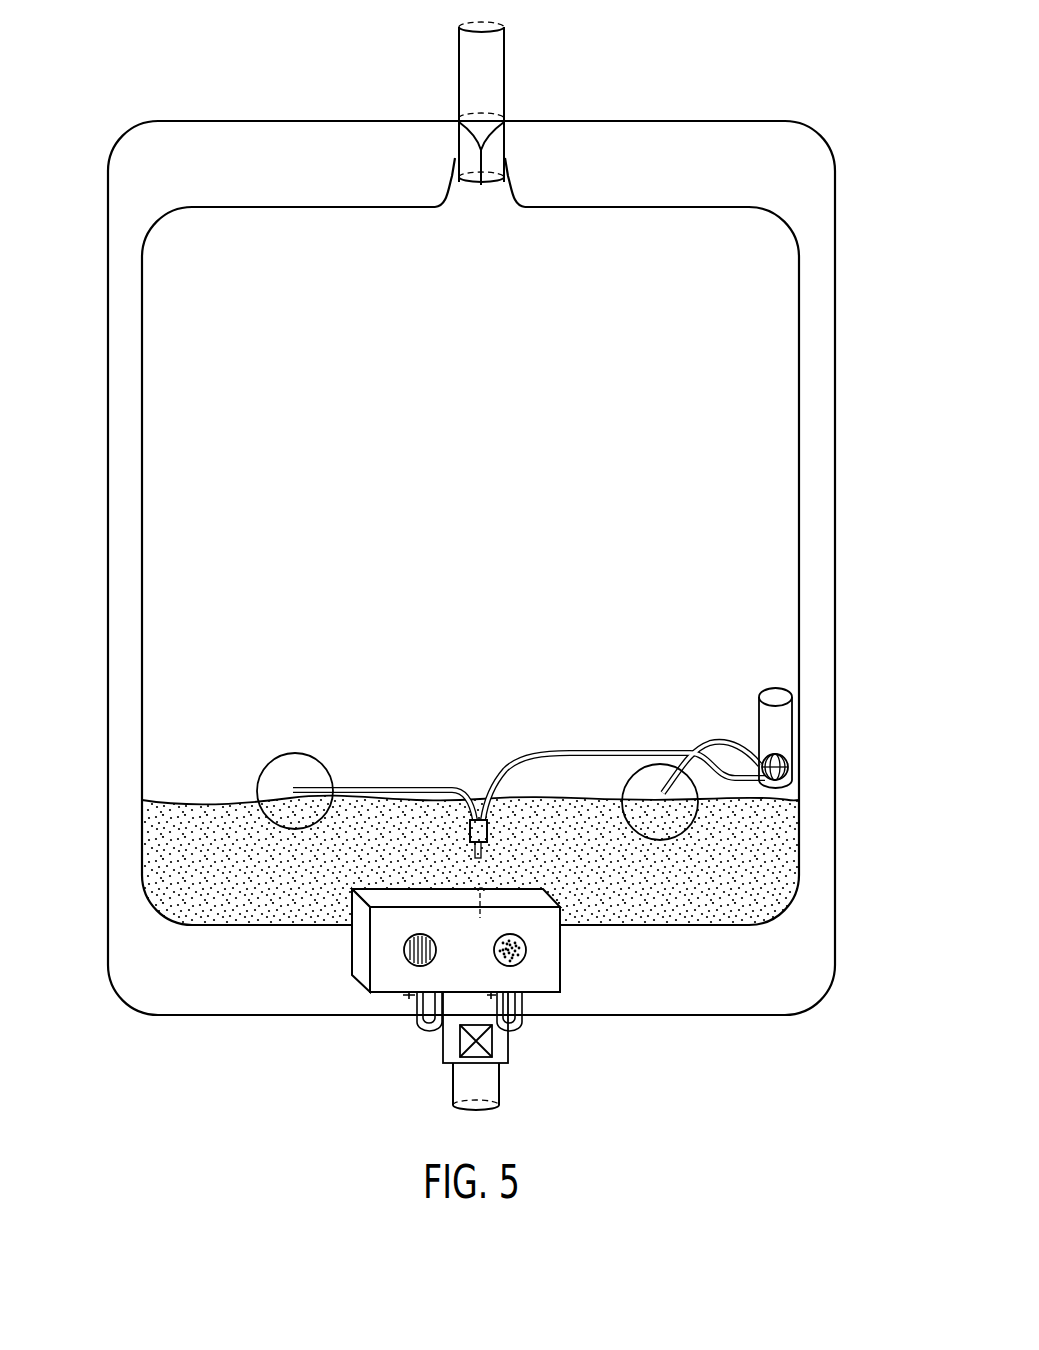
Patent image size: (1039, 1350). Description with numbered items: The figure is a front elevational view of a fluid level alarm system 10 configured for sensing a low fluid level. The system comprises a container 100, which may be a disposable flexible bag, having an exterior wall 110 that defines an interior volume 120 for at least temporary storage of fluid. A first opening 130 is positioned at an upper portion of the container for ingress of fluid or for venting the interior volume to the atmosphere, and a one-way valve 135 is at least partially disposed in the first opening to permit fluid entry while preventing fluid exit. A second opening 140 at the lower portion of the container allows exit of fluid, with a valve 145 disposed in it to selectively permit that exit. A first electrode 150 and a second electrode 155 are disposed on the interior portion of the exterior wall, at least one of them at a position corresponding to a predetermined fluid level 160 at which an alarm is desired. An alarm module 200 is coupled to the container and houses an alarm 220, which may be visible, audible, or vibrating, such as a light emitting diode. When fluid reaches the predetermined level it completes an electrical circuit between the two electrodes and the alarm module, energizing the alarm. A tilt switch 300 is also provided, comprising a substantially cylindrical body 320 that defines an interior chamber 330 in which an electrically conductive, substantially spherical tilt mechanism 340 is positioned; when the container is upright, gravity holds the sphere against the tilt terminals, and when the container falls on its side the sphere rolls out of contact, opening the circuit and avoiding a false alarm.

The fluid level alarm system 10 is at (806, 72).
The container 100 is at (818, 375).
The exterior wall 110 is at (836, 546).
The interior volume 120 is at (481, 579).
The first opening 130 is at (493, 48).
The one-way valve 135 is at (481, 133).
The second opening 140 is at (492, 1110).
The valve 145 is at (466, 1048).
The first electrode 150 is at (310, 768).
The second electrode 155 is at (638, 785).
The predetermined fluid level 160 is at (142, 800).
The alarm module 200 is at (553, 977).
The alarm 220 is at (526, 943).
The tilt switch 300 is at (793, 692).
The substantially cylindrical body 320 is at (782, 725).
The interior chamber 330 is at (772, 728).
The substantially spherical tilt mechanism 340 is at (790, 762).